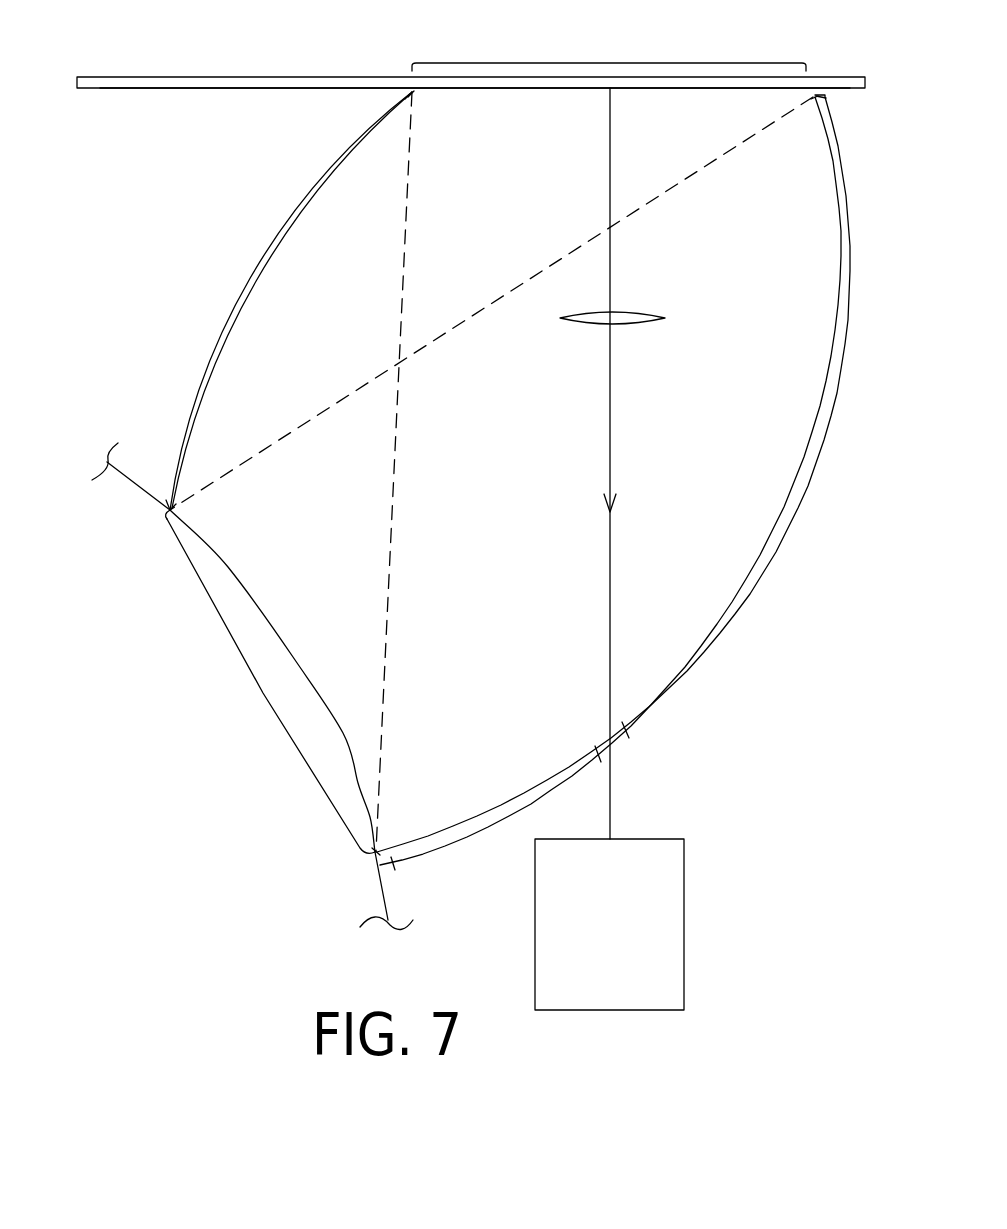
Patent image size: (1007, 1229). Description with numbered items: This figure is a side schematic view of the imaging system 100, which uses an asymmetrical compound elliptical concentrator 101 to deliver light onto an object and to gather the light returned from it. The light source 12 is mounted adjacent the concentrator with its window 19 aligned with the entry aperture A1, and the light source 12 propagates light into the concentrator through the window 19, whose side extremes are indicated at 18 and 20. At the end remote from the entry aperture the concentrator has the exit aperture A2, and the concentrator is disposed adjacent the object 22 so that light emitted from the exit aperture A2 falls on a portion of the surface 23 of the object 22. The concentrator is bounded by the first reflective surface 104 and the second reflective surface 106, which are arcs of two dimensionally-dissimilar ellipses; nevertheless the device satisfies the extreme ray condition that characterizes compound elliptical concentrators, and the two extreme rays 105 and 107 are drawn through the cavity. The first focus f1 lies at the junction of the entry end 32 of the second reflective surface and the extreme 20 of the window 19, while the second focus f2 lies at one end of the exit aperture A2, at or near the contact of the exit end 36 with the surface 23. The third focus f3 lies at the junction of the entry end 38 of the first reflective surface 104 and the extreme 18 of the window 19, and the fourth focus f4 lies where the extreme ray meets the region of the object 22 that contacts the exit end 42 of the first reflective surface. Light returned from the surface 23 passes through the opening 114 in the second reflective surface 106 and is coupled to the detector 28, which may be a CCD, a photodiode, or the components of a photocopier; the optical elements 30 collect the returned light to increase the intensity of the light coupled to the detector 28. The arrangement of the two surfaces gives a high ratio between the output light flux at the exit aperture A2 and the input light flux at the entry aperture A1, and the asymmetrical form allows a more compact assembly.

The light source 12 is at (120, 474).
The extreme of the window 18 is at (168, 511).
The window 19 is at (292, 657).
The extreme of the window 20 is at (378, 852).
The object 22 is at (175, 80).
The surface of the object 23 is at (165, 88).
The detector 28 is at (640, 935).
The optical elements 30 is at (616, 312).
The entry end of the second reflective surface 32 is at (393, 866).
The exit end of the second reflective surface 36 is at (818, 100).
The entry end of the first reflective surface 38 is at (168, 505).
The exit end of the first reflective surface 42 is at (406, 96).
The imaging system 100 is at (231, 300).
The asymmetrical compound elliptical concentrator 101 is at (781, 569).
The first reflective surface 104 is at (213, 357).
The extreme ray 105 is at (381, 375).
The second reflective surface 106 is at (692, 657).
The extreme ray 107 is at (390, 595).
The opening 114 is at (614, 742).
The entry aperture A1 is at (261, 688).
The exit aperture A2 is at (612, 63).
The first focus f1 is at (378, 850).
The second focus f2 is at (813, 98).
The third focus f3 is at (174, 506).
The fourth focus f4 is at (407, 101).